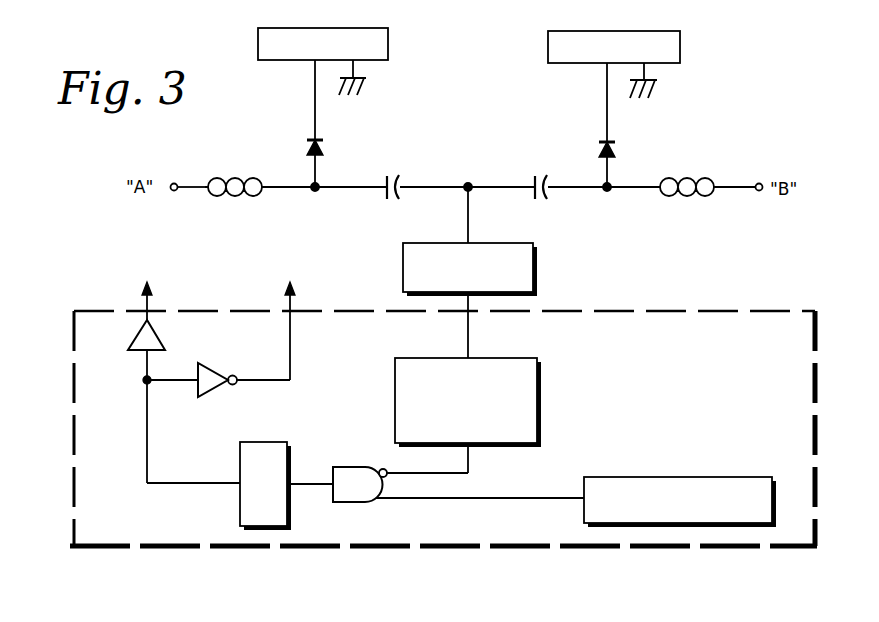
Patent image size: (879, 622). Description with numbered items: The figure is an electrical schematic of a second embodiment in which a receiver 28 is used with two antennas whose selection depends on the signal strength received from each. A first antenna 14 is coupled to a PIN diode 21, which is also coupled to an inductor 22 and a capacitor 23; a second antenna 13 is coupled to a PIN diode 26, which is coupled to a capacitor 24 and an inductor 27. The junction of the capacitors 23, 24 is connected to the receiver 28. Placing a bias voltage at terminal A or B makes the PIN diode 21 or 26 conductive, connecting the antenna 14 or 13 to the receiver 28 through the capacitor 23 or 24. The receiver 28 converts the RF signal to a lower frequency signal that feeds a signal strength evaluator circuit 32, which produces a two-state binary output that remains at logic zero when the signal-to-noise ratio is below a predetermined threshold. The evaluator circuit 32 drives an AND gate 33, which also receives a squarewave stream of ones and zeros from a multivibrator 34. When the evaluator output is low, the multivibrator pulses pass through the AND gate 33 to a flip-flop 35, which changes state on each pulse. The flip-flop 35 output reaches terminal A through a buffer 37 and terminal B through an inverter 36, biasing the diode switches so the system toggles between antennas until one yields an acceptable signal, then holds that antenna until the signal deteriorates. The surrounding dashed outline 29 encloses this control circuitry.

The second antenna 13 is at (662, 31).
The first antenna 14 is at (368, 28).
The PIN diode 21 is at (326, 151).
The inductor 22 is at (235, 182).
The capacitor 23 is at (379, 198).
The capacitor 24 is at (527, 198).
The PIN diode 26 is at (618, 153).
The inductor 27 is at (694, 182).
The receiver 28 is at (520, 243).
The control circuit 29 is at (654, 312).
The signal strength evaluator circuit 32 is at (518, 358).
The AND gate 33 is at (361, 504).
The multivibrator 34 is at (725, 477).
The flip-flop 35 is at (281, 442).
The inverter 36 is at (216, 368).
The buffer 37 is at (130, 336).